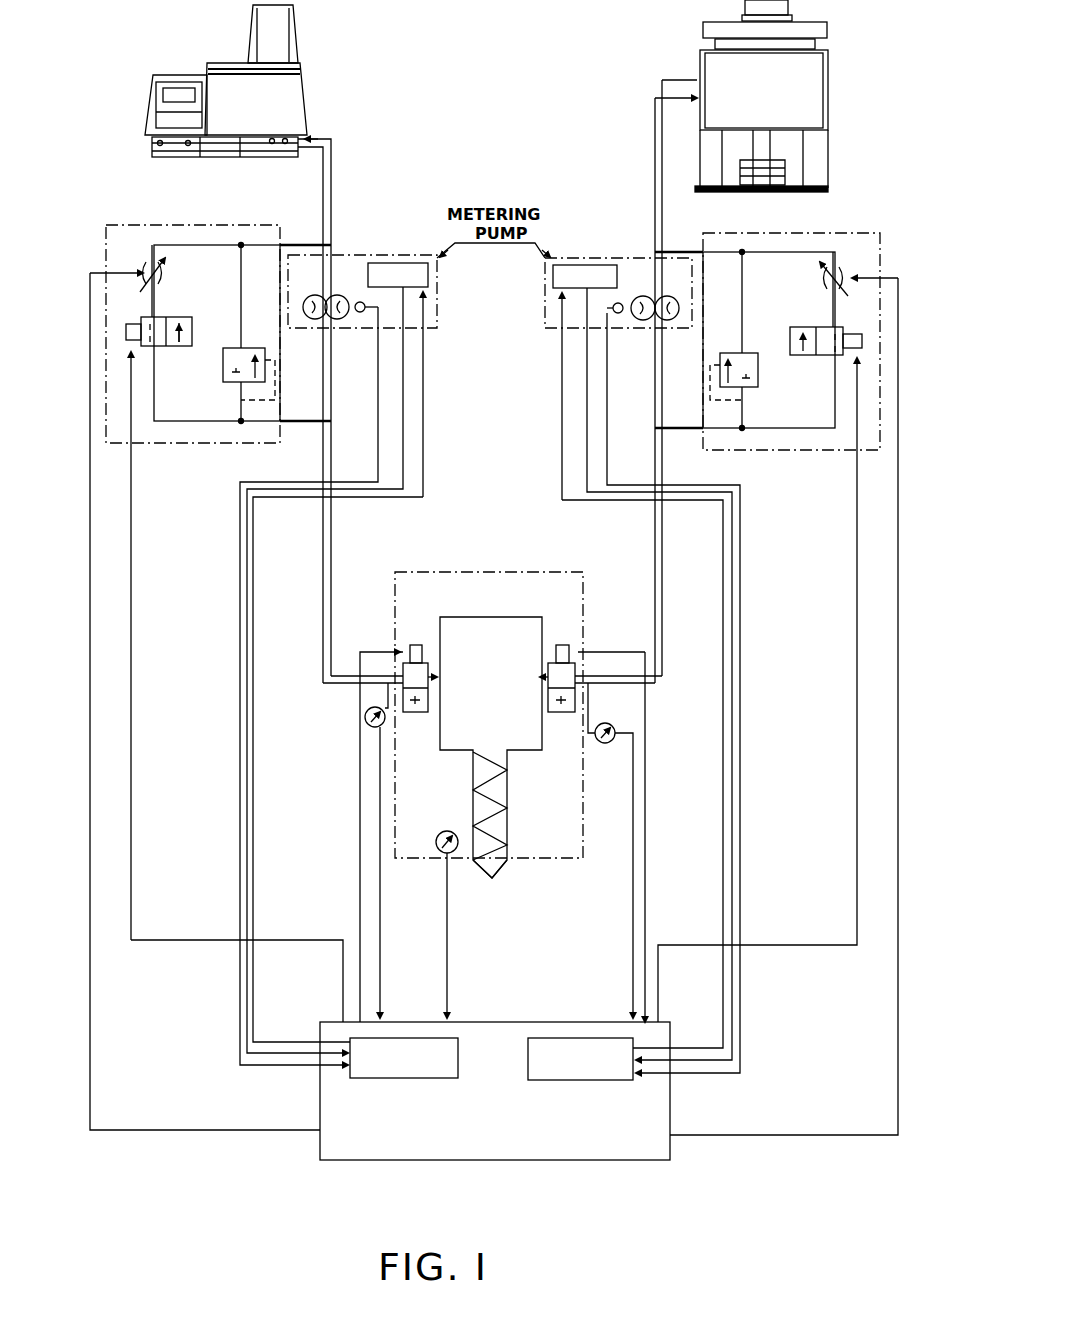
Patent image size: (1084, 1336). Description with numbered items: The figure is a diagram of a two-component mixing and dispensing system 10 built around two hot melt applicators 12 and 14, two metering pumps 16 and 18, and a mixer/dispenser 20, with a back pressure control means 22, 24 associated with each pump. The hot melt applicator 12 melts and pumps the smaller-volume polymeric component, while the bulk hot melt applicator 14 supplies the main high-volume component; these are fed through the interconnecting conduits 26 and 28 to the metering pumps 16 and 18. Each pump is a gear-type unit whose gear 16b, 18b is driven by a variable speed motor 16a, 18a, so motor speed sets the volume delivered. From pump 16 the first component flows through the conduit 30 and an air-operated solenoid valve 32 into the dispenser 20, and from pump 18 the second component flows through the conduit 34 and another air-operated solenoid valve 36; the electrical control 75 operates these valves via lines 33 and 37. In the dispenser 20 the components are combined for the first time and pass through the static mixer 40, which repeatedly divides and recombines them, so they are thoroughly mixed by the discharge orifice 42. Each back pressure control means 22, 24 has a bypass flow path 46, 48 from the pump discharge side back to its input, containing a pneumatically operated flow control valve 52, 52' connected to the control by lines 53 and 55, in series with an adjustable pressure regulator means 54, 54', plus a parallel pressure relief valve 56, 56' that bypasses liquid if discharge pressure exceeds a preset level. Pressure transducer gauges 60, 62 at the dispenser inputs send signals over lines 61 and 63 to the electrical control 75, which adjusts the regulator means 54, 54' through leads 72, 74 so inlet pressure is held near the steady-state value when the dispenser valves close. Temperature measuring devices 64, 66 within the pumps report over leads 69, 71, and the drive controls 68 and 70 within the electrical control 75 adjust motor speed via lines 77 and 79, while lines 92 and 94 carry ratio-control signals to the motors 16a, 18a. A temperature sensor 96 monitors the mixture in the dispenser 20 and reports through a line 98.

The two-component mixing and dispensing system 10 is at (262, 1160).
The hot melt applicator 12 is at (325, 68).
The bulk hot melt applicator 14 is at (692, 48).
The metering pump 16 is at (445, 312).
The variable speed motor 16a is at (403, 268).
The gear 16b is at (340, 322).
The metering pump 18 is at (543, 333).
The variable speed motor 18a is at (585, 268).
The gear 18b is at (640, 322).
The mixer/dispenser 20 is at (585, 808).
The back pressure control means 22 is at (186, 448).
The back pressure control means 24 is at (808, 455).
The interconnecting conduit 26 is at (333, 186).
The interconnecting conduit 28 is at (656, 148).
The conduit 30 is at (333, 522).
The air-operated solenoid valve 32 is at (392, 655).
The line 33 is at (360, 818).
The conduit 34 is at (655, 568).
The air-operated solenoid valve 36 is at (583, 662).
The line 37 is at (645, 792).
The static mixer 40 is at (473, 807).
The discharge orifice 42 is at (492, 885).
The bypass flow path 46 is at (258, 240).
The bypass flow path 48 is at (735, 252).
The pneumatically operated flow control valve 52 is at (165, 357).
The pneumatically operated flow control valve 52' is at (819, 363).
The line 53 is at (131, 645).
The adjustable pressure regulator means 54 is at (180, 281).
The adjustable pressure regulator means 54' is at (809, 289).
The line 55 is at (757, 690).
The pressure relief valve 56 is at (231, 383).
The pressure relief valve 56' is at (752, 390).
The pressure transducer gauge 60 is at (366, 728).
The line 61 is at (380, 912).
The pressure transducer gauge 62 is at (608, 745).
The line 63 is at (628, 920).
The temperature measuring device 64 is at (361, 300).
The temperature measuring device 66 is at (620, 300).
The drive control 68 is at (392, 1080).
The lead 69 is at (241, 592).
The drive control 70 is at (548, 1082).
The lead 71 is at (740, 630).
The lead 72 is at (90, 955).
The lead 74 is at (898, 718).
The electrical control 75 is at (668, 1167).
The line 77 is at (423, 440).
The line 79 is at (587, 466).
The line 92 is at (403, 398).
The line 94 is at (587, 402).
The temperature sensor 96 is at (436, 840).
The line 98 is at (447, 927).